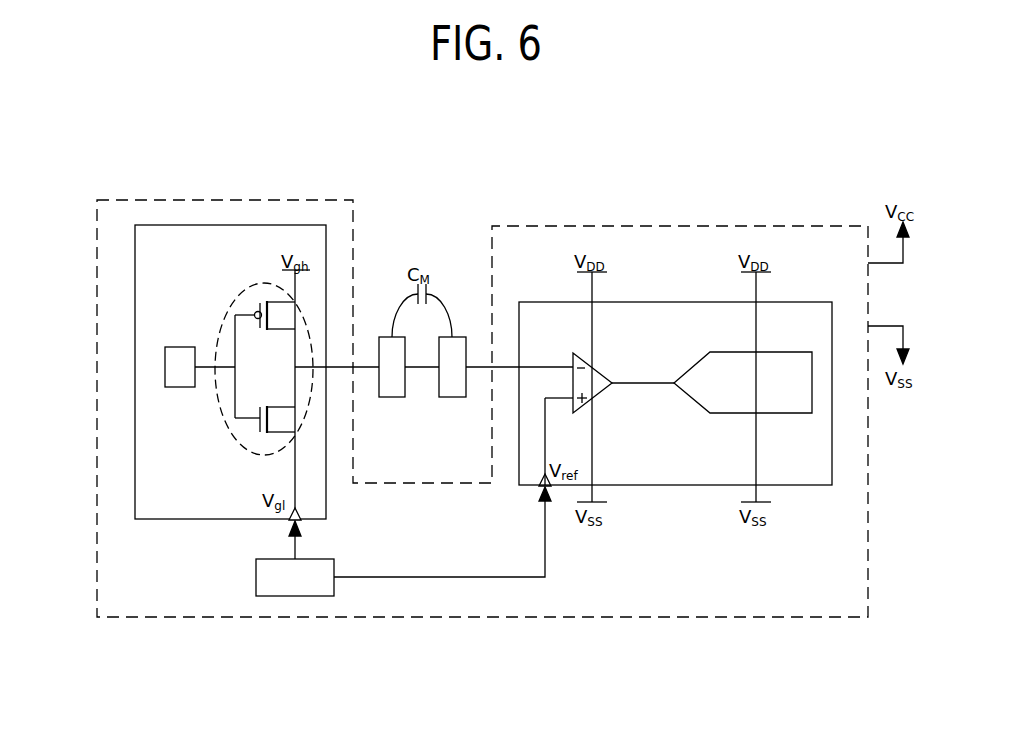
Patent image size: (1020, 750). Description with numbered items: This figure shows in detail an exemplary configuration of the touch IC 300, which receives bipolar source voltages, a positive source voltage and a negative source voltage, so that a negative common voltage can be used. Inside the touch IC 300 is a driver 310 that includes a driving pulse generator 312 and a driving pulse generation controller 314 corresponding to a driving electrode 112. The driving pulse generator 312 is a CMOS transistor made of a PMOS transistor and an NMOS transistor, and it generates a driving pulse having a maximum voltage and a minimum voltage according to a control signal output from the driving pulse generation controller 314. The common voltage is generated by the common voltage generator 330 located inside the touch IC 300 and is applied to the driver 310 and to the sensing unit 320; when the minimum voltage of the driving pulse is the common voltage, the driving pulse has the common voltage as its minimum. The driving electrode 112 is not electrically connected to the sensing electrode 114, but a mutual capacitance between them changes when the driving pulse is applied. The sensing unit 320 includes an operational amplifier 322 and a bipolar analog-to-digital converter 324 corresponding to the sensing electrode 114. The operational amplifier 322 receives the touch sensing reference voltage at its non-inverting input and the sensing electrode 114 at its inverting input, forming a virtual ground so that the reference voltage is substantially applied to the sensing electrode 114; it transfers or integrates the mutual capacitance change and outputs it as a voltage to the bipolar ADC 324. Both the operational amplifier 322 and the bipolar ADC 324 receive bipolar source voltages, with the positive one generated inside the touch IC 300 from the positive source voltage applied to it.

The touch IC 300 is at (97, 368).
The driver 310 is at (192, 521).
The driving pulse generator 312 is at (247, 285).
The driving pulse generation controller 314 is at (180, 389).
The driving electrode 112 is at (392, 398).
The sensing electrode 114 is at (452, 398).
The sensing unit 320 is at (678, 487).
The operational amplifier 322 is at (604, 378).
The bipolar analog-to-digital converter 324 is at (783, 352).
The common voltage generator 330 is at (335, 588).